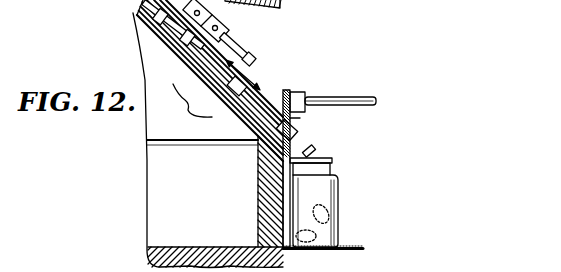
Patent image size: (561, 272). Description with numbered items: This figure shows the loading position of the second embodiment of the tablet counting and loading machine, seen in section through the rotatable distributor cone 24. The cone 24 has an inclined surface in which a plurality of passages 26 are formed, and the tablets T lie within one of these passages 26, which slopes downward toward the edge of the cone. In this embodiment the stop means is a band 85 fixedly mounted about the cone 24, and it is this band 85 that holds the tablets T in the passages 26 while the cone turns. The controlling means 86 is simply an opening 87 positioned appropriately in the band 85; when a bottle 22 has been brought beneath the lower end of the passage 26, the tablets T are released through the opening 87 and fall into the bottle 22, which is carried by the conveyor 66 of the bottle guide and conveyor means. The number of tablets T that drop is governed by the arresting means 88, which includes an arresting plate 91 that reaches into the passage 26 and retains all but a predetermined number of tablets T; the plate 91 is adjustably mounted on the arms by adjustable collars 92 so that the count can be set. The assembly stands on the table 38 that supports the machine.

The bottle 22 is at (335, 200).
The rotatable distributor cone 24 is at (190, 109).
The passages 26 is at (197, 75).
The table 38 is at (216, 253).
The conveyor 66 is at (294, 136).
The band 85 is at (284, 90).
The controlling means 86 is at (370, 86).
The opening 87 is at (291, 119).
The arresting means 88 is at (238, 15).
The arresting plate 91 is at (238, 15).
The adjustable collars 92 is at (141, 12).
The tablets T is at (143, 60).